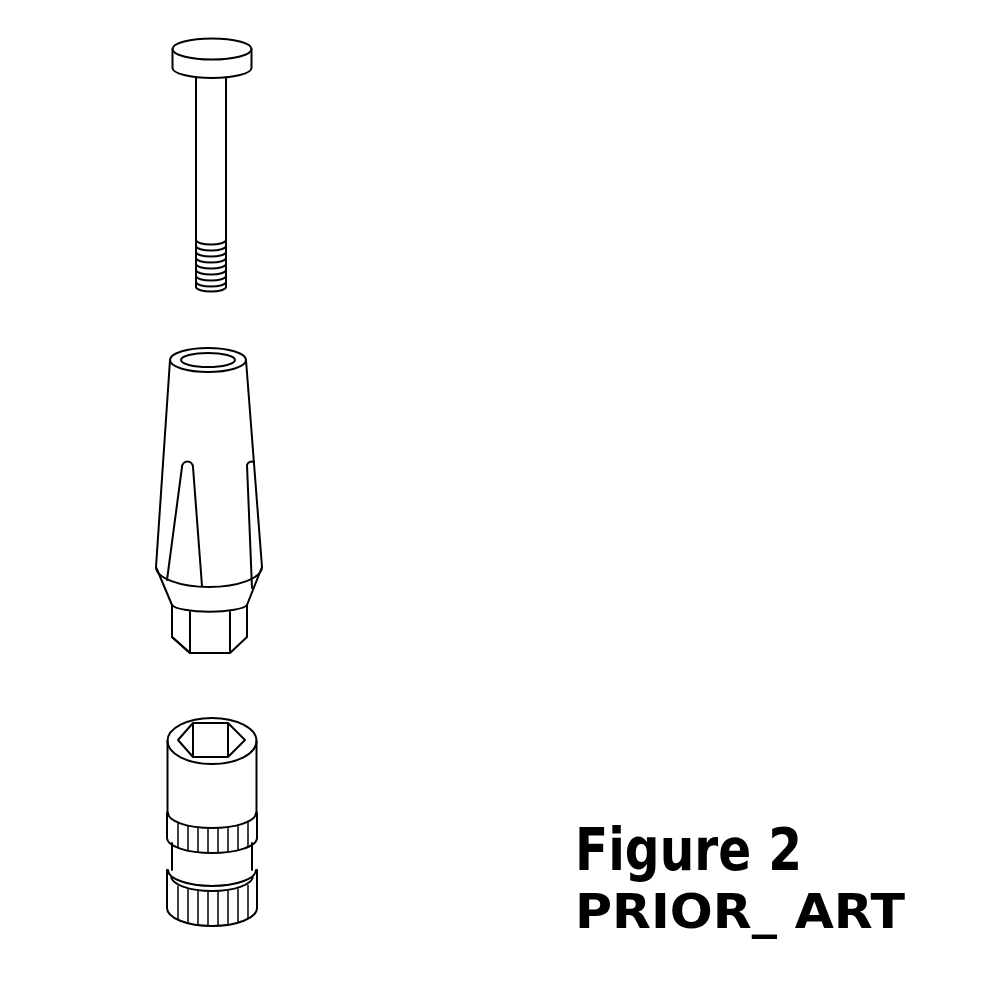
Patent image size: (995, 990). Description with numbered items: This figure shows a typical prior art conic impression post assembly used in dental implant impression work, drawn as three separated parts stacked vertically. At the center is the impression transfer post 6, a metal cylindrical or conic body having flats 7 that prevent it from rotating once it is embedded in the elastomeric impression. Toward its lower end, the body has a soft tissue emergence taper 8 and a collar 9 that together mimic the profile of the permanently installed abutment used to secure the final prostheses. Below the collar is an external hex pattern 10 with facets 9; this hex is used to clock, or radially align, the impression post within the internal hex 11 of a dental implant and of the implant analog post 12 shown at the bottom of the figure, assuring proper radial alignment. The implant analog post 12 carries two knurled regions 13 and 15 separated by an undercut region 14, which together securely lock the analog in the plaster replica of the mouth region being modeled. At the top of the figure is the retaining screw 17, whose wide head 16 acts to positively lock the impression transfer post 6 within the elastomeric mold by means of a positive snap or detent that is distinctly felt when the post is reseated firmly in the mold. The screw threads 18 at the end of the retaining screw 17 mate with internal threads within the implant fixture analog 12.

The impression transfer post 6 is at (252, 395).
The flats 7 is at (182, 528).
The soft tissue emergence taper 8 is at (250, 593).
The collar 9 is at (237, 628).
The external hex pattern 10 is at (185, 640).
The internal hex 11 is at (223, 743).
The implant analog post 12 is at (252, 777).
The knurled region 13 is at (257, 830).
The undercut region 14 is at (250, 863).
The knurled region 15 is at (177, 902).
The wide head 16 is at (250, 58).
The retaining screw 17 is at (227, 167).
The screw threads 18 is at (227, 270).